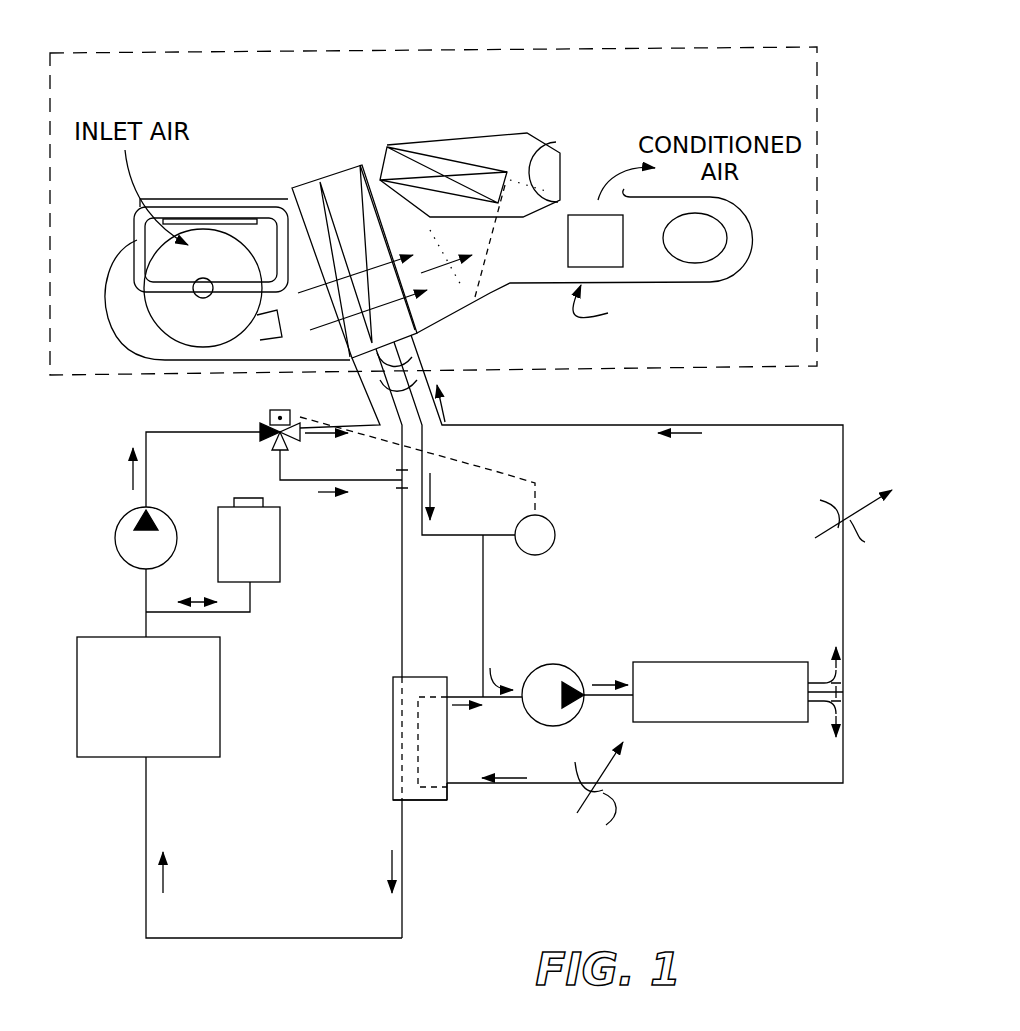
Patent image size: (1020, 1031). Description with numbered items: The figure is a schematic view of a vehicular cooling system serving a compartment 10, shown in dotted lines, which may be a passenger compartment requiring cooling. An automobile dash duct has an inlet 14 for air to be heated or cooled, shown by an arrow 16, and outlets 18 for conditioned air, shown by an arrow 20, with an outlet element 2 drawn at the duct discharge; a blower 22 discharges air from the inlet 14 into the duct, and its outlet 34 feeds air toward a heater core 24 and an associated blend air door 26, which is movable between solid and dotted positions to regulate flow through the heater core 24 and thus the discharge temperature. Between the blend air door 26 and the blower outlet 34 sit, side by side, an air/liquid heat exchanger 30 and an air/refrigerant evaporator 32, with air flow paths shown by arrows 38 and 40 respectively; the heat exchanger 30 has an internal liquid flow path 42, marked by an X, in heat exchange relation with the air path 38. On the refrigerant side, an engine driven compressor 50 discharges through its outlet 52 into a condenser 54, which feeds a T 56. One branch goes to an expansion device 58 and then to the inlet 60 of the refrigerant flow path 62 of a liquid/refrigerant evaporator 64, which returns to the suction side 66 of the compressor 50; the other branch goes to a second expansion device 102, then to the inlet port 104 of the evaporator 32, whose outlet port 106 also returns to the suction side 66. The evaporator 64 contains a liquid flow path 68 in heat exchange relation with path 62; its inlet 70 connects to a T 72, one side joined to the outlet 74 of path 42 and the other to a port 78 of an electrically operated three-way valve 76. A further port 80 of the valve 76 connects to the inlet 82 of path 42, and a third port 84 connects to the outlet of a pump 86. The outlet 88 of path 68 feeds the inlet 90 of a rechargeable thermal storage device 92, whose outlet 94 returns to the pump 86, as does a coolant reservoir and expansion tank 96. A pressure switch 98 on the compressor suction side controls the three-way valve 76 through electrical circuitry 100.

The compartment 10 is at (832, 196).
The outlet vent 2 is at (598, 270).
The inlet 14 is at (205, 212).
The arrow 16 is at (140, 183).
The outlets 18 is at (748, 225).
The arrow 20 is at (596, 200).
The blower 22 is at (150, 317).
The heater core 24 is at (437, 163).
The blend air door 26 is at (535, 177).
The air/liquid heat exchanger 30 is at (302, 185).
The air/refrigerant evaporator 32 is at (340, 168).
The outlet 34 is at (262, 333).
The air flow path 38 is at (320, 322).
The air flow path 40 is at (408, 300).
The liquid flow path 42 is at (320, 288).
The compressor 50 is at (546, 664).
The compressor outlet 52 is at (580, 700).
The condenser 54 is at (690, 662).
The T 56 is at (846, 692).
The expansion device 58 is at (602, 823).
The inlet 60 is at (450, 790).
The refrigerant flow path 62 is at (420, 740).
The liquid/refrigerant evaporator 64 is at (395, 805).
The suction side 66 is at (528, 697).
The liquid flow path 68 is at (400, 738).
The inlet 70 is at (396, 678).
The T 72 is at (400, 488).
The outlet 74 is at (428, 382).
The three-way valve 76 is at (295, 440).
The port 78 is at (280, 468).
The port 80 is at (298, 425).
The inlet 82 is at (347, 370).
The port 84 is at (258, 432).
The pump 86 is at (118, 530).
The outlet 88 is at (406, 808).
The inlet 90 is at (150, 766).
The thermal storage device 92 is at (226, 706).
The outlet 94 is at (138, 637).
The coolant reservoir and expansion tank 96 is at (282, 548).
The pressure switch 98 is at (556, 526).
The electrical circuitry 100 is at (505, 475).
The second expansion device 102 is at (825, 515).
The inlet port 104 is at (423, 340).
The outlet port 106 is at (427, 357).